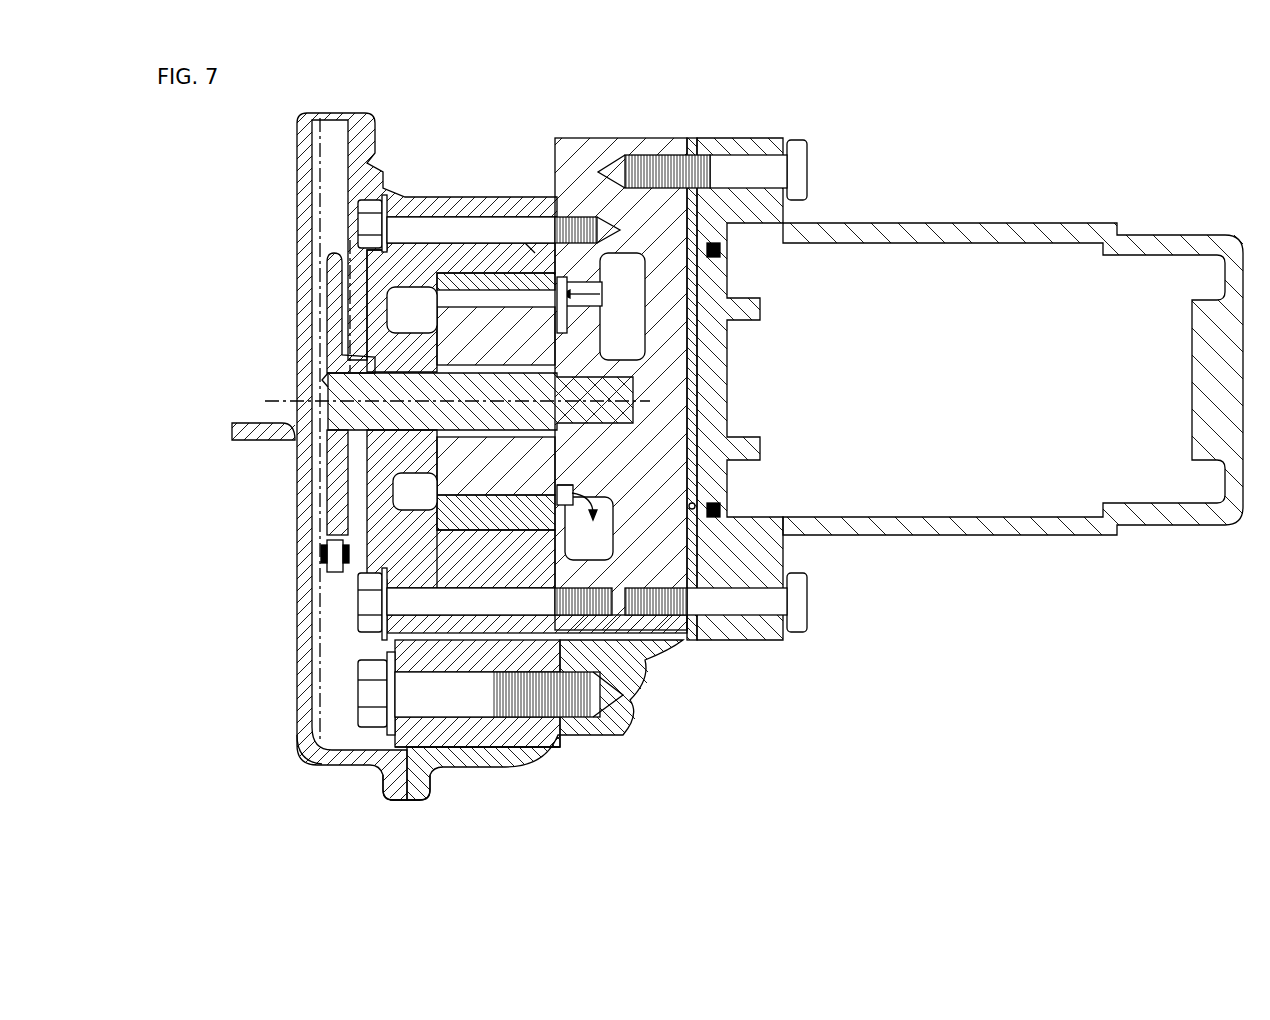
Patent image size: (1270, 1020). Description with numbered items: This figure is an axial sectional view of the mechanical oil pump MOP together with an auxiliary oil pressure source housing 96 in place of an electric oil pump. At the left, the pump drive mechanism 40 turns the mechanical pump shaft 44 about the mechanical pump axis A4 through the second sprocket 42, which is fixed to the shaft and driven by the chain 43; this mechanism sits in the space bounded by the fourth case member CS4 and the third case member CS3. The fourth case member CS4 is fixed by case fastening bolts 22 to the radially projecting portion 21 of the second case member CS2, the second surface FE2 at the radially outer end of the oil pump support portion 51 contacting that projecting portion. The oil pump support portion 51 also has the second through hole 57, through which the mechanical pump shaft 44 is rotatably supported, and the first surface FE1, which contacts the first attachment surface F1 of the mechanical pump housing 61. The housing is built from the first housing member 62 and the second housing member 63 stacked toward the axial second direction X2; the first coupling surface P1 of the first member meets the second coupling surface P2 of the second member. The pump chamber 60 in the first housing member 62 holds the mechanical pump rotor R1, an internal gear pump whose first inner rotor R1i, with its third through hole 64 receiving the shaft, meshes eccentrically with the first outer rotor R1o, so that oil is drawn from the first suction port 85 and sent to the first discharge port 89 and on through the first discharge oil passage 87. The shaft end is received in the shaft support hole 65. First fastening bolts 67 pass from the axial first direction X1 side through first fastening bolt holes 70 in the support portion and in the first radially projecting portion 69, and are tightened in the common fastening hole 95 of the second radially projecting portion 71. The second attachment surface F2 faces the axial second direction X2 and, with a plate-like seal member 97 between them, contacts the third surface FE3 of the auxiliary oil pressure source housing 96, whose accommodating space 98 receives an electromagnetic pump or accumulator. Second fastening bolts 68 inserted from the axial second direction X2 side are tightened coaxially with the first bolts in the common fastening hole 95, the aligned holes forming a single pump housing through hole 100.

The pump drive mechanism 40 is at (315, 195).
The second sprocket 42 is at (330, 297).
The mechanical pump shaft 44 is at (325, 383).
The mechanical pump axis A4 is at (443, 402).
The chain 43 is at (330, 570).
The mechanical pump rotor R1 is at (241, 489).
The first inner rotor R1i is at (398, 478).
The first outer rotor R1o is at (395, 520).
The first fastening bolt 67 is at (380, 232).
The case fastening bolt 22 is at (365, 690).
The third case member CS3 is at (300, 712).
The oil pump support portion 51 is at (378, 783).
The fourth case member CS4 is at (336, 801).
The second case member CS2 is at (433, 783).
The second surface FE2 is at (493, 730).
The radially projecting portion 21 is at (510, 743).
The first radially projecting portion 69 is at (557, 727).
The first discharge oil passage 87 is at (603, 653).
The common fastening hole 95 is at (633, 627).
The pump housing through hole 100 is at (470, 600).
The second radially projecting portion 71 is at (653, 625).
The first fastening bolt hole 70 is at (440, 230).
The mechanical oil pump MOP is at (450, 190).
The pump chamber 60 is at (471, 295).
The first suction port 85 is at (530, 250).
The mechanical pump housing 61 is at (555, 120).
The first housing member 62 is at (493, 213).
The second housing member 63 is at (552, 167).
The second through hole 57 is at (415, 370).
The third through hole 64 is at (518, 388).
The shaft support hole 65 is at (573, 387).
The first discharge port 89 is at (565, 485).
The first surface FE1 is at (440, 540).
The first attachment surface F1 is at (428, 570).
The first coupling surface P1 is at (555, 558).
The second coupling surface P2 is at (605, 590).
The second attachment surface F2 is at (690, 505).
The third surface FE3 is at (697, 547).
The seal member 97 is at (690, 138).
The second fastening bolt 68 is at (800, 167).
The auxiliary oil pressure source housing 96 is at (947, 228).
The accommodating space 98 is at (1047, 270).
The axial first direction X1 is at (1050, 715).
The axial second direction X2 is at (1040, 711).